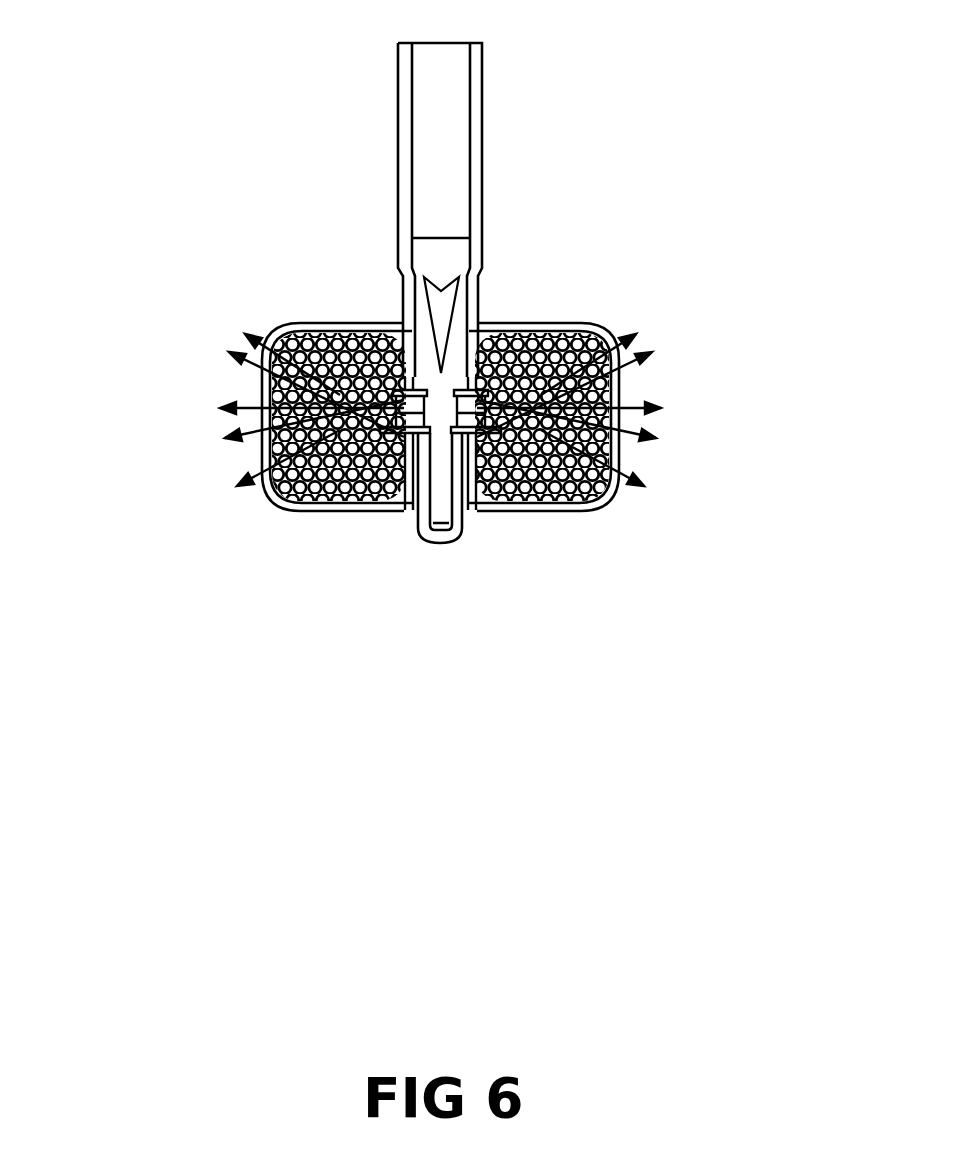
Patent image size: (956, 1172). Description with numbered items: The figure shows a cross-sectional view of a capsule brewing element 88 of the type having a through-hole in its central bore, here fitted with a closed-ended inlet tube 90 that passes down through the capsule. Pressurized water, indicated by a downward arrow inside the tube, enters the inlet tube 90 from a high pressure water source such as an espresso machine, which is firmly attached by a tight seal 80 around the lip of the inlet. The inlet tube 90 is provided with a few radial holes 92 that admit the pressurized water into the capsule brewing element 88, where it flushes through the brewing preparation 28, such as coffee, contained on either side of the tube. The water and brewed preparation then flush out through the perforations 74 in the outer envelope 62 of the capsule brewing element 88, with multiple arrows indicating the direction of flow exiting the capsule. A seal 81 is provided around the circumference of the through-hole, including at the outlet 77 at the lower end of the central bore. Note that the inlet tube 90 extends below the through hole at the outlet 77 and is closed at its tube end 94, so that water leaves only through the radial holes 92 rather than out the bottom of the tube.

The capsule brewing element 88 is at (449, 403).
The inlet tube 90 is at (362, 188).
The tight seal 80 is at (544, 210).
The outer envelope 62 is at (231, 331).
The brewing preparation 28 is at (640, 349).
The perforations 74 is at (662, 444).
The seal 81 is at (628, 511).
The outlet 77 is at (562, 565).
The radial holes 92 is at (321, 542).
The tube end 94 is at (345, 620).